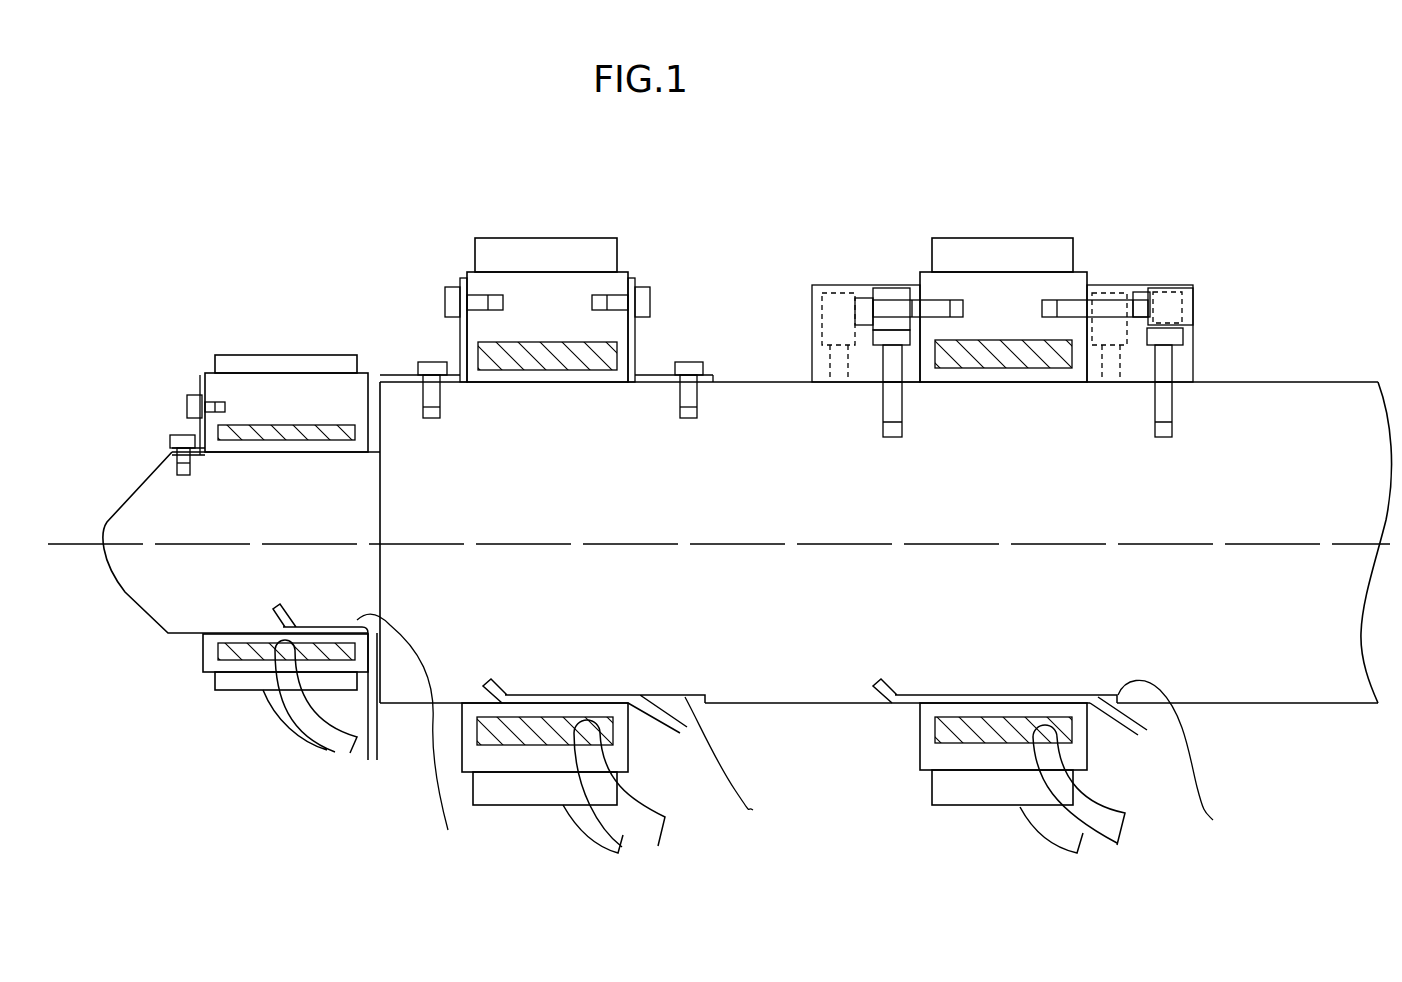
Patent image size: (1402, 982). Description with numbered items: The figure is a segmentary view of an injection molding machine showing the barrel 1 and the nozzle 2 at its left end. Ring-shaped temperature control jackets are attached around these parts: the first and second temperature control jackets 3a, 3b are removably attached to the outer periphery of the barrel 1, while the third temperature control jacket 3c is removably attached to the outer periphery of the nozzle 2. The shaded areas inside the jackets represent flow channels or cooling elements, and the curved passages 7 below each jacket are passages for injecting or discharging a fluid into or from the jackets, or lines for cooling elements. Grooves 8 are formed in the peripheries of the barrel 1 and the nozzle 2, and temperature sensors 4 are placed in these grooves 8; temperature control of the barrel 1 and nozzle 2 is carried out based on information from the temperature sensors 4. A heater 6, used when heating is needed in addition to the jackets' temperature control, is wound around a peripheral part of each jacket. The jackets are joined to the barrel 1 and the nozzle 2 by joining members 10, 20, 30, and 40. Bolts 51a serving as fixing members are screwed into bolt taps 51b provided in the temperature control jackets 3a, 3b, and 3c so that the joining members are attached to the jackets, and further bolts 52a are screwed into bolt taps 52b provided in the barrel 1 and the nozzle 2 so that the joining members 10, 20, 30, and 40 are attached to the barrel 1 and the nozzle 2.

The barrel 1 is at (1317, 594).
The nozzle 2 is at (145, 502).
The first temperature control jacket 3a is at (1008, 298).
The second temperature control jacket 3b is at (418, 370).
The third temperature control jacket 3c is at (222, 382).
The temperature sensor 4 is at (375, 735).
The heater 6 is at (550, 257).
The passage 7 is at (290, 697).
The groove 8 is at (797, 743).
The joining member 10 is at (197, 430).
The joining member 20 is at (234, 401).
The joining member 30 is at (234, 401).
The joining member 40 is at (813, 287).
The bolt 51a is at (643, 290).
The bolt tap 51b is at (618, 295).
The bolt 52a is at (700, 372).
The bolt tap 52b is at (682, 395).